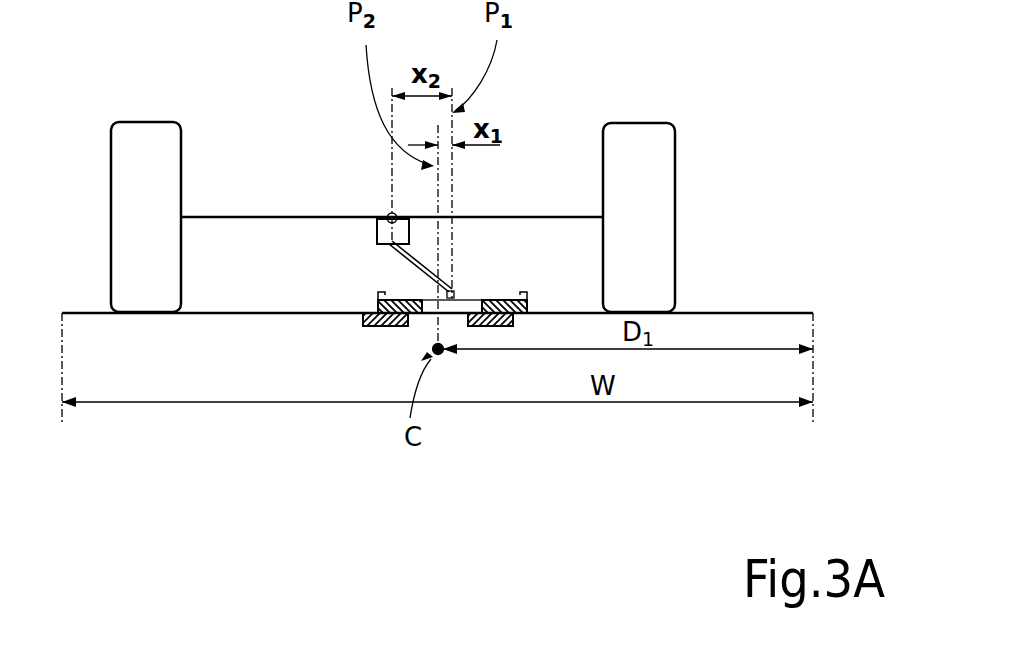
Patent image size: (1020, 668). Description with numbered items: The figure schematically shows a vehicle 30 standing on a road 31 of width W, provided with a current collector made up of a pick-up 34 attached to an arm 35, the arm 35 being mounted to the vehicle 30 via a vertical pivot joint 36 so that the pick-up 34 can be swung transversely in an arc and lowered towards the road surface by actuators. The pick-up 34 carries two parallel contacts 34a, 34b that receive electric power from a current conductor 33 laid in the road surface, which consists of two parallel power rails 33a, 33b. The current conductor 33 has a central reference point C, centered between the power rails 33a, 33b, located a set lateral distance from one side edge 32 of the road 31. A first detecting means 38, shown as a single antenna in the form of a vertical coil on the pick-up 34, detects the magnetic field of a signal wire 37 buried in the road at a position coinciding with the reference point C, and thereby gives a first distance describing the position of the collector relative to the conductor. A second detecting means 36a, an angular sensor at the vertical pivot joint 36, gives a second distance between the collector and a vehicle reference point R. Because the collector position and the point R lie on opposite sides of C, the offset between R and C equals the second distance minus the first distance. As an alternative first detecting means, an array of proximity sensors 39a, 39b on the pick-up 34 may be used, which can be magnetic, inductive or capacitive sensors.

The vehicle 30 is at (580, 217).
The road 31 is at (742, 312).
The side edge 32 is at (820, 332).
The current conductor 33 is at (425, 389).
The power rail 33a is at (380, 327).
The power rail 33b is at (497, 327).
The pick-up 34 is at (369, 187).
The contact 34a is at (388, 304).
The contact 34b is at (508, 298).
The arm 35 is at (420, 313).
The vertical pivot joint 36 is at (345, 151).
The second detecting means 36a is at (388, 214).
The signal wire 37 is at (441, 354).
The first detecting means 38 is at (453, 292).
The proximity sensor 39a is at (383, 293).
The proximity sensor 39b is at (522, 290).